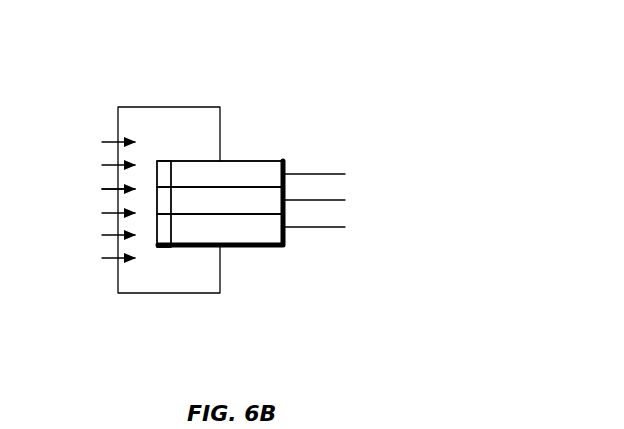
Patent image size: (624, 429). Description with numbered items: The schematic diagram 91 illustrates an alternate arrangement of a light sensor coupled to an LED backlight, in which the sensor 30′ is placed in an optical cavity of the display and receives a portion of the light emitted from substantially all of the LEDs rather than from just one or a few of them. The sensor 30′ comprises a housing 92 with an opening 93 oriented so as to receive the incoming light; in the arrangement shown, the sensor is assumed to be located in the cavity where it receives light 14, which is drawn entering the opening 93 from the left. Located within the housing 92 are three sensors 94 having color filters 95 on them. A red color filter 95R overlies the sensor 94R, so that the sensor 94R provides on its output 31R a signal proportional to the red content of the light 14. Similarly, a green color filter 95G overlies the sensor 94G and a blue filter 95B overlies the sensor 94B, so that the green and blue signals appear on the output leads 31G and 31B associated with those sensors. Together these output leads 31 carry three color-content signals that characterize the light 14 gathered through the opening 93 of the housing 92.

The light 14 is at (112, 190).
The sensor 30′ is at (309, 312).
The output leads 31 is at (396, 278).
The output 31R is at (332, 172).
The output lead 31G is at (343, 199).
The output lead 31B is at (335, 228).
The schematic diagram 91 is at (385, 71).
The housing 92 is at (195, 294).
The opening 93 is at (125, 133).
The sensors 94 is at (250, 138).
The sensor 94R is at (262, 172).
The sensor 94G is at (259, 203).
The sensor 94B is at (232, 235).
The color filters 95 is at (187, 93).
The red color filter 95R is at (165, 165).
The green color filter 95G is at (163, 203).
The blue filter 95B is at (162, 230).